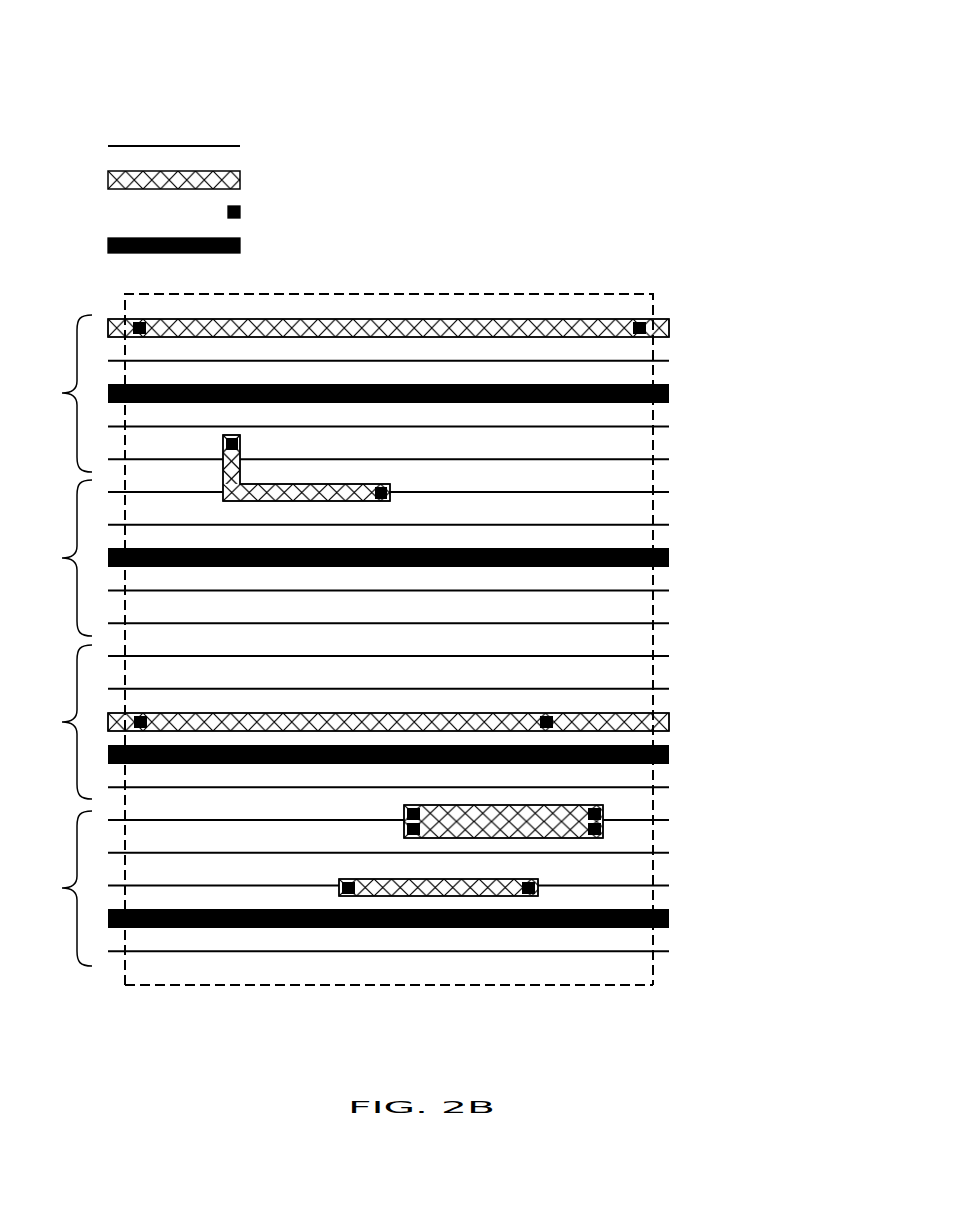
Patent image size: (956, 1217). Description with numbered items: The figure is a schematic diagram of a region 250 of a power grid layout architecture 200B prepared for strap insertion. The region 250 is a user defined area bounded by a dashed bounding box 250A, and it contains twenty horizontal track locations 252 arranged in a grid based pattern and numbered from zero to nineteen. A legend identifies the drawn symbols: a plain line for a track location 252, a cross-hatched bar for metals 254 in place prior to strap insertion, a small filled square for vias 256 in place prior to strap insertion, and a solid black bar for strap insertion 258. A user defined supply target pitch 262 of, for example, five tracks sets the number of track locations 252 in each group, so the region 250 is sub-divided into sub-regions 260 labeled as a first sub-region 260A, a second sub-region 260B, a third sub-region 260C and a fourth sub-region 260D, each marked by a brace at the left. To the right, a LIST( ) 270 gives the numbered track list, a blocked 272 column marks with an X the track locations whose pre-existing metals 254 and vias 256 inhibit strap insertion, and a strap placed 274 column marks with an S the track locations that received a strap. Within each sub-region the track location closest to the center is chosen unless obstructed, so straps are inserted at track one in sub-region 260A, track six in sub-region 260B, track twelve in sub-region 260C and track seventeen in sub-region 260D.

The power grid layout architecture 200B is at (80, 23).
The region 250 is at (520, 294).
The bounding box 250A is at (557, 985).
The track location 252 is at (264, 146).
The metal in place prior to strap insertion 254 is at (356, 180).
The via in place prior to strap insertion 256 is at (406, 213).
The strap insertion 258 is at (264, 245).
The sub-regions 260 is at (238, 98).
The first sub-region 260A is at (49, 888).
The second sub-region 260B is at (49, 722).
The third sub-region 260C is at (49, 558).
The fourth sub-region 260D is at (49, 393).
The supply target pitch 262 is at (249, 64).
The LIST( ) 270 is at (702, 579).
The blocked tracks 272 is at (767, 563).
The strap placed 274 is at (833, 537).